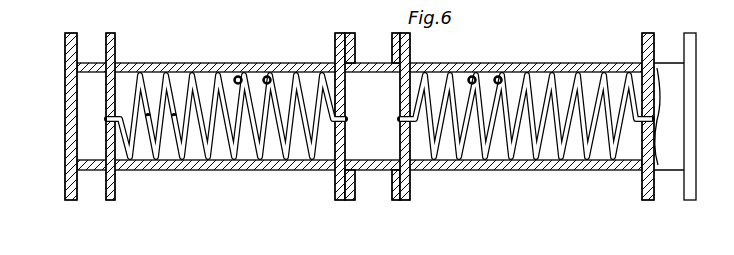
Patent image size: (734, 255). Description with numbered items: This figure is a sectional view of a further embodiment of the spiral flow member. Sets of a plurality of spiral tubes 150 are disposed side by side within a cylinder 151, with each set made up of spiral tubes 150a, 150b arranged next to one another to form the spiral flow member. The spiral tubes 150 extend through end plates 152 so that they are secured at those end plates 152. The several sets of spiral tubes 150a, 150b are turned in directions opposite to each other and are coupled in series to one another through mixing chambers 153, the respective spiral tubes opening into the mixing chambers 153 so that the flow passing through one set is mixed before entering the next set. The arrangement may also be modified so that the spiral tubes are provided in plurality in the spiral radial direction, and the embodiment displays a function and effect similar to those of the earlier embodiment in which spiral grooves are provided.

The spiral tubes 150 is at (349, 79).
The spiral tube 150a is at (139, 77).
The spiral tube 150b is at (186, 84).
The cylinder 151 is at (273, 63).
The end plates 152 is at (114, 188).
The mixing chambers 153 is at (93, 150).